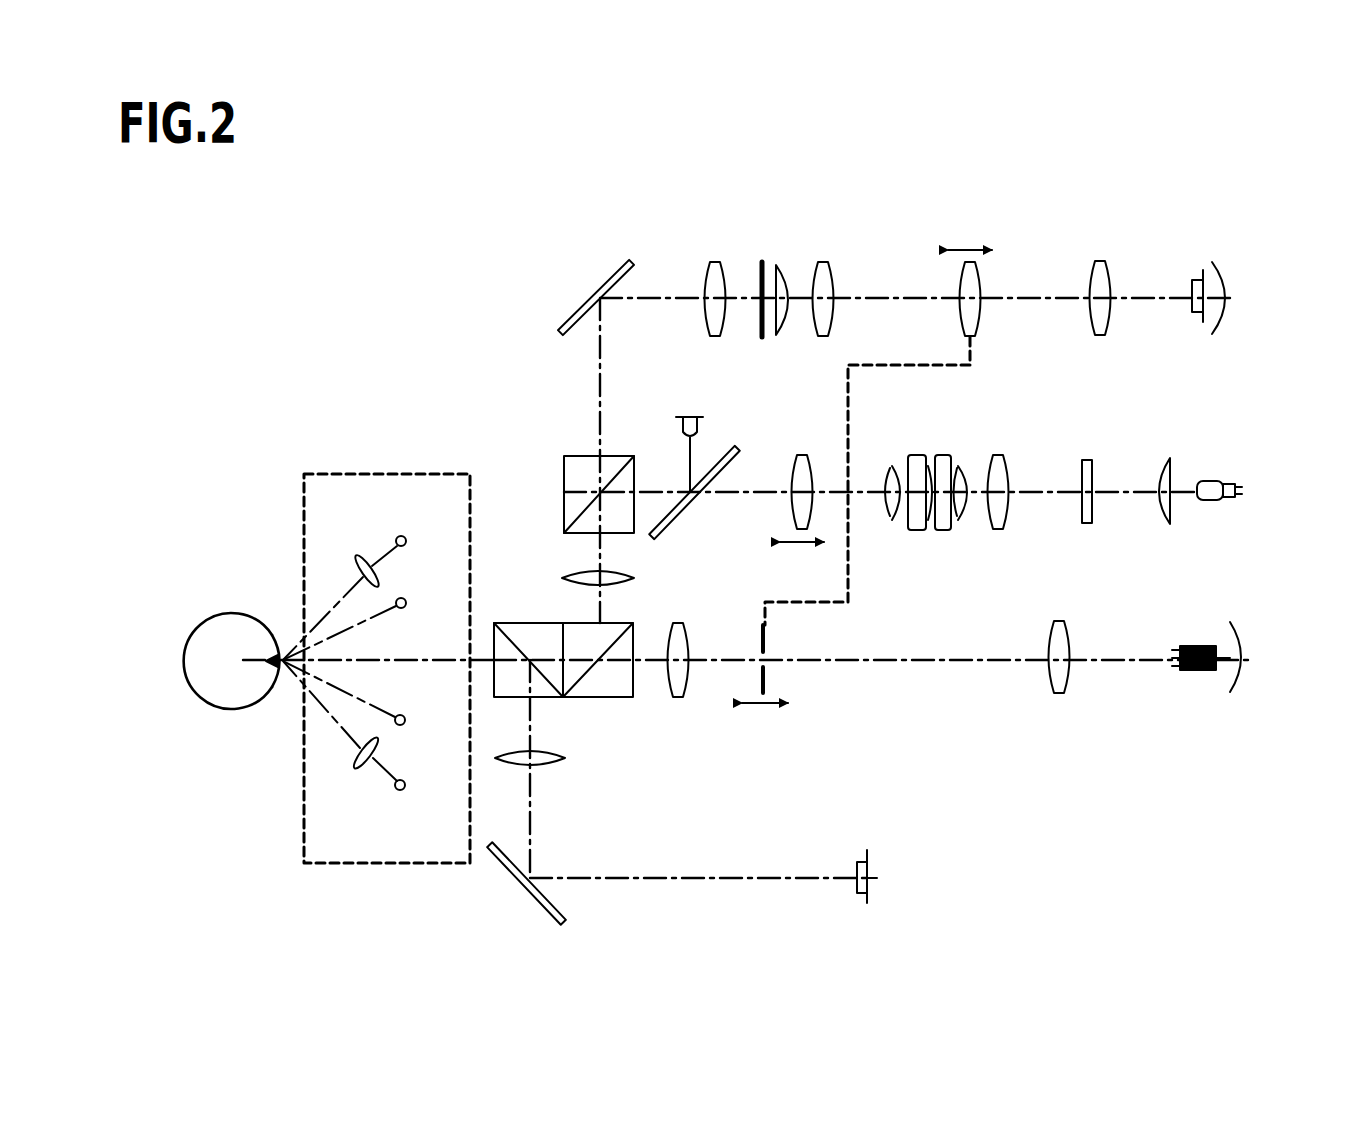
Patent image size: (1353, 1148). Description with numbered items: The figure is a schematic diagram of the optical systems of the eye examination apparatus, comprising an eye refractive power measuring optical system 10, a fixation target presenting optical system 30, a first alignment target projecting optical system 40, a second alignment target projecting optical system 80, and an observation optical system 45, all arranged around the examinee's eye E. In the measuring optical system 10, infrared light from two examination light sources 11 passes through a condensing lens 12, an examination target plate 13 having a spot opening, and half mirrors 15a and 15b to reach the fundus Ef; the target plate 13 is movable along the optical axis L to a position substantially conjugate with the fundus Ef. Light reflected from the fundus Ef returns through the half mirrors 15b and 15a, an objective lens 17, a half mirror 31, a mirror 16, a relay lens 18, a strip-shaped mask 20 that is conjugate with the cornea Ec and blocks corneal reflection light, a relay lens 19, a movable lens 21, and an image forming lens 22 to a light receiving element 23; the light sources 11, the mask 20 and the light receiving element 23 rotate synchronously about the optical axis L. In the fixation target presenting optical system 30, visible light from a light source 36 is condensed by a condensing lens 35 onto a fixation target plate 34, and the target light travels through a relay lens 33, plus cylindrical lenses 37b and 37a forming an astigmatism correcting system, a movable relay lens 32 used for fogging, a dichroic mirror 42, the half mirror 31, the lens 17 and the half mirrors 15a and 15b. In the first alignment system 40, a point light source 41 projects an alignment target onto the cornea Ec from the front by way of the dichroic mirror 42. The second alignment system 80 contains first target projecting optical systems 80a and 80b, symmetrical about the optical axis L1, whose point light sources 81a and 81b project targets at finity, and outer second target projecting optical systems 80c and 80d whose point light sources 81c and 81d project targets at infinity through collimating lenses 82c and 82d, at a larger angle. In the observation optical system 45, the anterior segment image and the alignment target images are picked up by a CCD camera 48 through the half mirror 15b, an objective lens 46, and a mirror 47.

The eye E is at (226, 694).
The cornea Ec is at (272, 640).
The fundus Ef is at (187, 662).
The optical axis L is at (898, 655).
The optical axis L1 is at (417, 665).
The eye refractive power measuring optical system 10 is at (1000, 680).
The examination light sources 11 is at (1195, 643).
The condensing lens 12 is at (1058, 633).
The examination target plate 13 is at (769, 678).
The half mirror 15a is at (620, 688).
The half mirror 15b is at (547, 699).
The mirror 16 is at (598, 293).
The objective lens 17 is at (562, 578).
The relay lens 18 is at (710, 290).
The relay lens 19 is at (824, 287).
The strip-shaped mask 20 is at (768, 262).
The movable lens 21 is at (972, 283).
The image forming lens 22 is at (1100, 287).
The light receiving element 23 is at (1197, 272).
The fixation target presenting optical system 30 is at (1243, 455).
The half mirror 31 is at (580, 490).
The relay lens 32 is at (798, 483).
The relay lens 33 is at (997, 455).
The fixation target plate 34 is at (1084, 458).
The condensing lens 35 is at (1158, 458).
The light source 36 is at (1211, 478).
The plus cylindrical lens 37a is at (915, 453).
The plus cylindrical lens 37b is at (942, 453).
The first alignment target projecting optical system 40 is at (692, 405).
The point light source 41 is at (683, 418).
The dichroic mirror 42 is at (693, 503).
The observation optical system 45 is at (855, 824).
The objective lens 46 is at (540, 762).
The mirror 47 is at (555, 903).
The CCD camera 48 is at (857, 863).
The second alignment target projecting optical system 80 is at (388, 474).
The first target projecting optical system 80a is at (362, 625).
The first target projecting optical system 80b is at (372, 718).
The second target projecting optical system 80c is at (335, 585).
The second target projecting optical system 80d is at (320, 720).
The point light source 81a is at (407, 601).
The point light source 81b is at (406, 722).
The point light source 81c is at (397, 537).
The point light source 81d is at (398, 790).
The collimating lens 82c is at (343, 549).
The collimating lens 82d is at (358, 760).